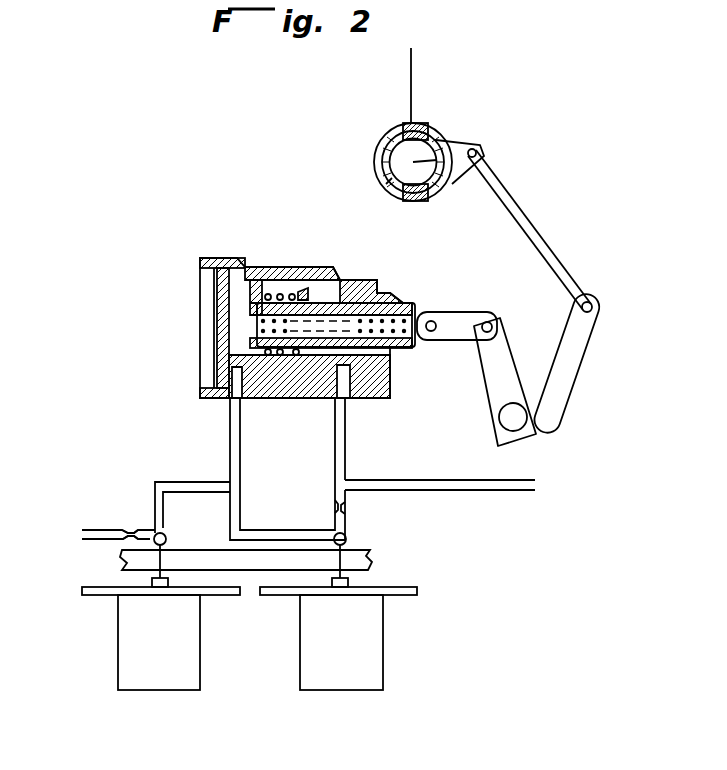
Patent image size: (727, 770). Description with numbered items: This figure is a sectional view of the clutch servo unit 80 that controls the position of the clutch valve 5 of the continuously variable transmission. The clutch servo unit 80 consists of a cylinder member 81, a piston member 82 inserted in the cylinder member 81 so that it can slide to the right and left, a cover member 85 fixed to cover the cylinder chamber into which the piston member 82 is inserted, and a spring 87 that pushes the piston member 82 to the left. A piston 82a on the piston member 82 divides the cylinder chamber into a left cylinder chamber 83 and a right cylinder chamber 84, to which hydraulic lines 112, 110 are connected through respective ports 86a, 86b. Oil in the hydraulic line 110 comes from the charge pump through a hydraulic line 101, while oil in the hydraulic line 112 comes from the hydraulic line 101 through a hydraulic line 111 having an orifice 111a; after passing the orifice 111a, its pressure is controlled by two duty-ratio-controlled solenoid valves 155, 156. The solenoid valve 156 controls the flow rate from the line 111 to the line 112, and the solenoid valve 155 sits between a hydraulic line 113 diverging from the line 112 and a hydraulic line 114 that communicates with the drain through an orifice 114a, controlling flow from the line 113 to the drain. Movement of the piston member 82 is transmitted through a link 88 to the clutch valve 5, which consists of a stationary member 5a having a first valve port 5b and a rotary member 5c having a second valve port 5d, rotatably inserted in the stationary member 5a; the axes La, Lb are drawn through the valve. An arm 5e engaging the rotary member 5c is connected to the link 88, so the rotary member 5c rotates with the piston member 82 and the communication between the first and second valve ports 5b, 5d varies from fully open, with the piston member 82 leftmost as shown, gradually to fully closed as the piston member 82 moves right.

The clutch valve 5 is at (427, 144).
The stationary member 5a is at (375, 165).
The first valve port 5b is at (405, 124).
The rotary member 5c is at (385, 186).
The second valve port 5d is at (418, 201).
The arm 5e is at (482, 143).
The axis La is at (415, 80).
The axis Lb is at (440, 178).
The link 88 is at (578, 254).
The clutch servo unit 80 is at (281, 319).
The cylinder member 81 is at (300, 267).
The piston member 82 is at (368, 300).
The piston 82a is at (248, 275).
The left cylinder chamber 83 is at (228, 300).
The right cylinder chamber 84 is at (322, 290).
The cover member 85 is at (215, 290).
The port 86a is at (233, 405).
The port 86b is at (352, 405).
The spring 87 is at (278, 365).
The hydraulic line 110 is at (346, 455).
The hydraulic line 111 is at (347, 514).
The orifice 111a is at (348, 507).
The hydraulic line 112 is at (242, 460).
The hydraulic line 113 is at (180, 480).
The hydraulic line 114 is at (92, 528).
The orifice 114a is at (128, 530).
The hydraulic line 101 is at (492, 491).
The solenoid valve 155 is at (172, 678).
The solenoid valve 156 is at (362, 678).